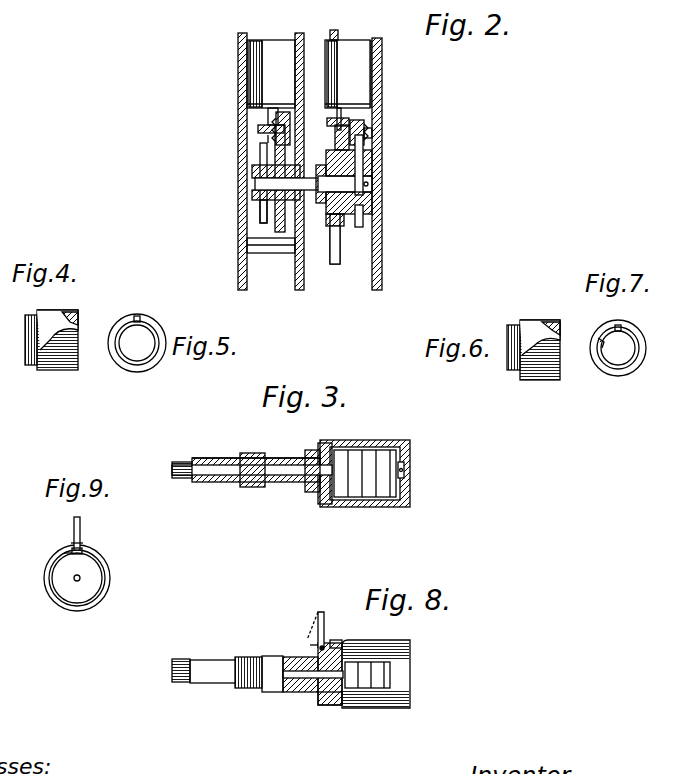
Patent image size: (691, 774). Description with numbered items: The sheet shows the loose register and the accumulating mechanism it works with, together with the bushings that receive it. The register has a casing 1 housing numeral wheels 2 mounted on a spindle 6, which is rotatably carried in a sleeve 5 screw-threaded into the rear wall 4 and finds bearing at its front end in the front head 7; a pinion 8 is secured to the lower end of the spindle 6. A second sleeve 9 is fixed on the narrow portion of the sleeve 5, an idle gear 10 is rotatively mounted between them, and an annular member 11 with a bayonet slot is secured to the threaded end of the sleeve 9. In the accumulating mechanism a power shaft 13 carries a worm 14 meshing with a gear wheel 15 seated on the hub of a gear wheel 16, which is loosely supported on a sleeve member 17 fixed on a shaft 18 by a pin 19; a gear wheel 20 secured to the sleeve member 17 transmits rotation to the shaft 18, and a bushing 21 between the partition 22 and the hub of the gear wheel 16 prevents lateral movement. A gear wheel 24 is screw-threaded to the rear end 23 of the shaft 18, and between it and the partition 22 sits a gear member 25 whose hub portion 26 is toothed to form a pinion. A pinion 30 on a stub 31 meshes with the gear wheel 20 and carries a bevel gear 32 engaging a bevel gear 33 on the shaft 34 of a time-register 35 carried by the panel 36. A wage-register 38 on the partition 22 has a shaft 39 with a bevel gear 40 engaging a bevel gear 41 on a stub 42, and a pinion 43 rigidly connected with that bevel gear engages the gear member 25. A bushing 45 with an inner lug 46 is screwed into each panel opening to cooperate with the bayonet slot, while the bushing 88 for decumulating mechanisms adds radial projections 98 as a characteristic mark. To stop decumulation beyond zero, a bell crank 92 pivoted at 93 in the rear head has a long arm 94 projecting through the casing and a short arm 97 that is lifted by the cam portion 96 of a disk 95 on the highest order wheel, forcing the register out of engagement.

In FIG. 3, the casing 1 is at (412, 502).
In FIG. 9, the casing 1 is at (79, 612).
In FIG. 8, the casing 1 is at (410, 704).
In FIG. 3, the numeral wheels 2 is at (361, 500).
In FIG. 8, the numeral wheels 2 is at (385, 680).
In FIG. 3, the rear wall 4 is at (321, 444).
In FIG. 8, the rear wall 4 is at (322, 700).
In FIG. 3, the sleeve 5 is at (222, 462).
In FIG. 8, the sleeve 5 is at (212, 660).
In FIG. 3, the spindle 6 is at (208, 476).
In FIG. 9, the spindle 6 is at (75, 581).
In FIG. 8, the spindle 6 is at (290, 690).
In FIG. 3, the front head 7 is at (410, 457).
In FIG. 3, the pinion 8 is at (177, 480).
In FIG. 8, the pinion 8 is at (178, 659).
In FIG. 3, the second sleeve 9 is at (279, 484).
In FIG. 8, the second sleeve 9 is at (274, 657).
In FIG. 3, the idle gear 10 is at (250, 455).
In FIG. 8, the idle gear 10 is at (248, 657).
In FIG. 3, the annular member 11 is at (312, 494).
In FIG. 8, the annular member 11 is at (305, 693).
In FIG. 2, the power shaft 13 is at (331, 35).
In FIG. 2, the worm 14 is at (324, 176).
In FIG. 2, the gear wheel 15 is at (337, 226).
In FIG. 2, the gear wheel 16 is at (372, 156).
In FIG. 2, the sleeve member 17 is at (372, 193).
In FIG. 2, the shaft 18 is at (382, 183).
In FIG. 2, the pin 19 is at (364, 170).
In FIG. 2, the gear wheel 20 is at (360, 216).
In FIG. 2, the bushing 21 is at (319, 203).
In FIG. 2, the partition 22 is at (302, 291).
In FIG. 2, the rear end 23 is at (256, 183).
In FIG. 2, the gear wheel 24 is at (263, 150).
In FIG. 2, the gear member 25 is at (280, 233).
In FIG. 2, the hub portion 26 is at (262, 206).
In FIG. 2, the pinion 30 is at (366, 120).
In FIG. 2, the stub 31 is at (372, 134).
In FIG. 2, the bevel gear 32 is at (356, 118).
In FIG. 2, the bevel gear 33 is at (340, 108).
In FIG. 2, the shaft 34 is at (352, 110).
In FIG. 2, the time-register 35 is at (348, 45).
In FIG. 2, the panel 36 is at (382, 272).
In FIG. 2, the wage-register 38 is at (265, 42).
In FIG. 2, the shaft 39 is at (265, 110).
In FIG. 2, the bevel gear 40 is at (262, 129).
In FIG. 2, the bevel gear 41 is at (266, 140).
In FIG. 2, the stub 42 is at (266, 127).
In FIG. 2, the pinion 43 is at (272, 118).
In FIG. 4, the bushing 45 is at (48, 372).
In FIG. 5, the bushing 45 is at (137, 372).
In FIG. 4, the lug 46 is at (75, 320).
In FIG. 5, the lug 46 is at (140, 318).
In FIG. 6, the lug 46 is at (556, 320).
In FIG. 7, the lug 46 is at (622, 330).
In FIG. 6, the bushing 88 is at (528, 380).
In FIG. 7, the bushing 88 is at (619, 376).
In FIG. 9, the bell crank 92 is at (72, 543).
In FIG. 8, the bell crank 92 is at (324, 647).
In FIG. 9, the pivot 93 is at (66, 556).
In FIG. 8, the pivot 93 is at (316, 648).
In FIG. 9, the long arm 94 is at (74, 522).
In FIG. 8, the long arm 94 is at (318, 614).
In FIG. 9, the disk 95 is at (92, 588).
In FIG. 8, the disk 95 is at (328, 705).
In FIG. 9, the cam portion 96 is at (100, 565).
In FIG. 9, the short arm 97 is at (82, 550).
In FIG. 8, the short arm 97 is at (342, 644).
In FIG. 7, the radial projections 98 is at (600, 340).